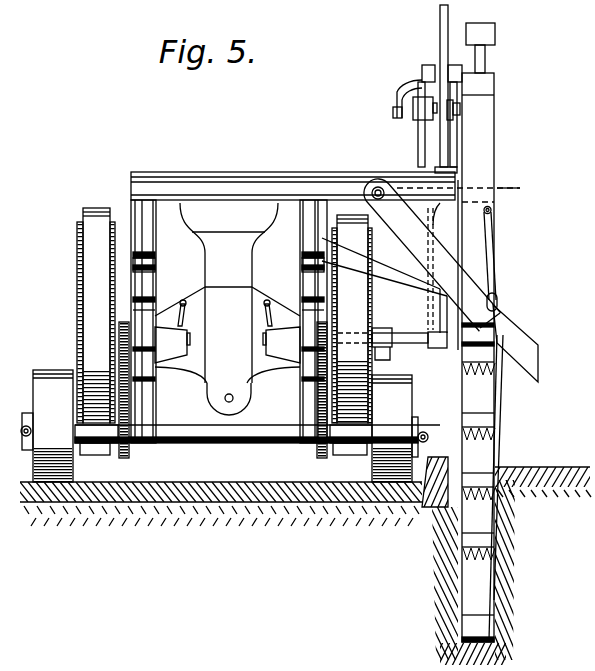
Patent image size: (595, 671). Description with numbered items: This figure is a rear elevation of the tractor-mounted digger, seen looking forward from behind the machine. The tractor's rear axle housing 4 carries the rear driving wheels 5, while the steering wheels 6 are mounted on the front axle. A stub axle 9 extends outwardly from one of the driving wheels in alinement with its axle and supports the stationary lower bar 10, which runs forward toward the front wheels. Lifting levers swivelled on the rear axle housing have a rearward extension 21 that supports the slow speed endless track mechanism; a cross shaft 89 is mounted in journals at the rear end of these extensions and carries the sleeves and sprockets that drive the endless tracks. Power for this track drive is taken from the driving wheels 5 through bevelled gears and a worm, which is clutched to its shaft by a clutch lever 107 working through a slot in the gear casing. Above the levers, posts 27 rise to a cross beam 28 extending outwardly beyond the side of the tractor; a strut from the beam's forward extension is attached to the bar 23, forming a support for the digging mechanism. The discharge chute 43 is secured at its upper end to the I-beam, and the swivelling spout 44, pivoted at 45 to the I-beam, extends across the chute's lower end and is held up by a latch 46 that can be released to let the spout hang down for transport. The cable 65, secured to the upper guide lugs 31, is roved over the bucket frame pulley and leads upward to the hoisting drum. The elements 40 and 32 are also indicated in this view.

The cross beam 28 is at (190, 185).
The rear driving wheels 5 is at (88, 305).
The posts 27 is at (150, 282).
The clutch lever 107 is at (186, 311).
The rearward extension 21 is at (145, 400).
The rear axle housing 4 is at (225, 372).
The cross shaft 89 is at (263, 435).
The discharge chute 43 is at (485, 143).
The pivot 45 is at (375, 186).
The steering wheels 6 is at (392, 180).
The latch 46 is at (490, 240).
The swivelling spout 44 is at (467, 288).
The plate 40 is at (544, 343).
The cable 65 is at (498, 392).
The bar 23 is at (397, 277).
The stub axle 9 is at (412, 340).
The stationary lower bar 10 is at (388, 358).
The member 32 is at (583, 37).
The upper guide lugs 31 is at (587, 103).